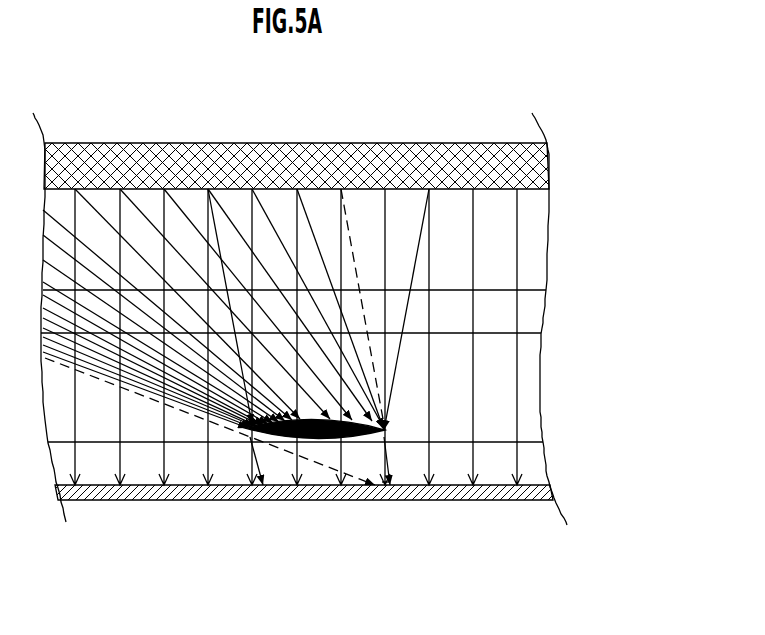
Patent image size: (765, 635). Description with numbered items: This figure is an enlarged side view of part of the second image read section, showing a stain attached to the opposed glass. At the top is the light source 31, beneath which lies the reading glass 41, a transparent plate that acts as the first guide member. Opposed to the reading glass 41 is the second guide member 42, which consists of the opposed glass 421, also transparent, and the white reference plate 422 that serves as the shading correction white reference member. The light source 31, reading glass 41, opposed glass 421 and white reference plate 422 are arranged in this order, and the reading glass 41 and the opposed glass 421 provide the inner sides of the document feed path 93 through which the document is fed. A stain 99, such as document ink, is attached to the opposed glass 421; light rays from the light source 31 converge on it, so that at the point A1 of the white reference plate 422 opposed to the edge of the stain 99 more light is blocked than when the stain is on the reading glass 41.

The light source 31 is at (547, 163).
The reading glass 41 is at (530, 315).
The document feed path 93 is at (533, 393).
The stain 99 is at (337, 443).
The point A1 is at (386, 470).
The second guide member 42 is at (372, 474).
The opposed glass 421 is at (530, 467).
The white reference plate 422 is at (550, 493).